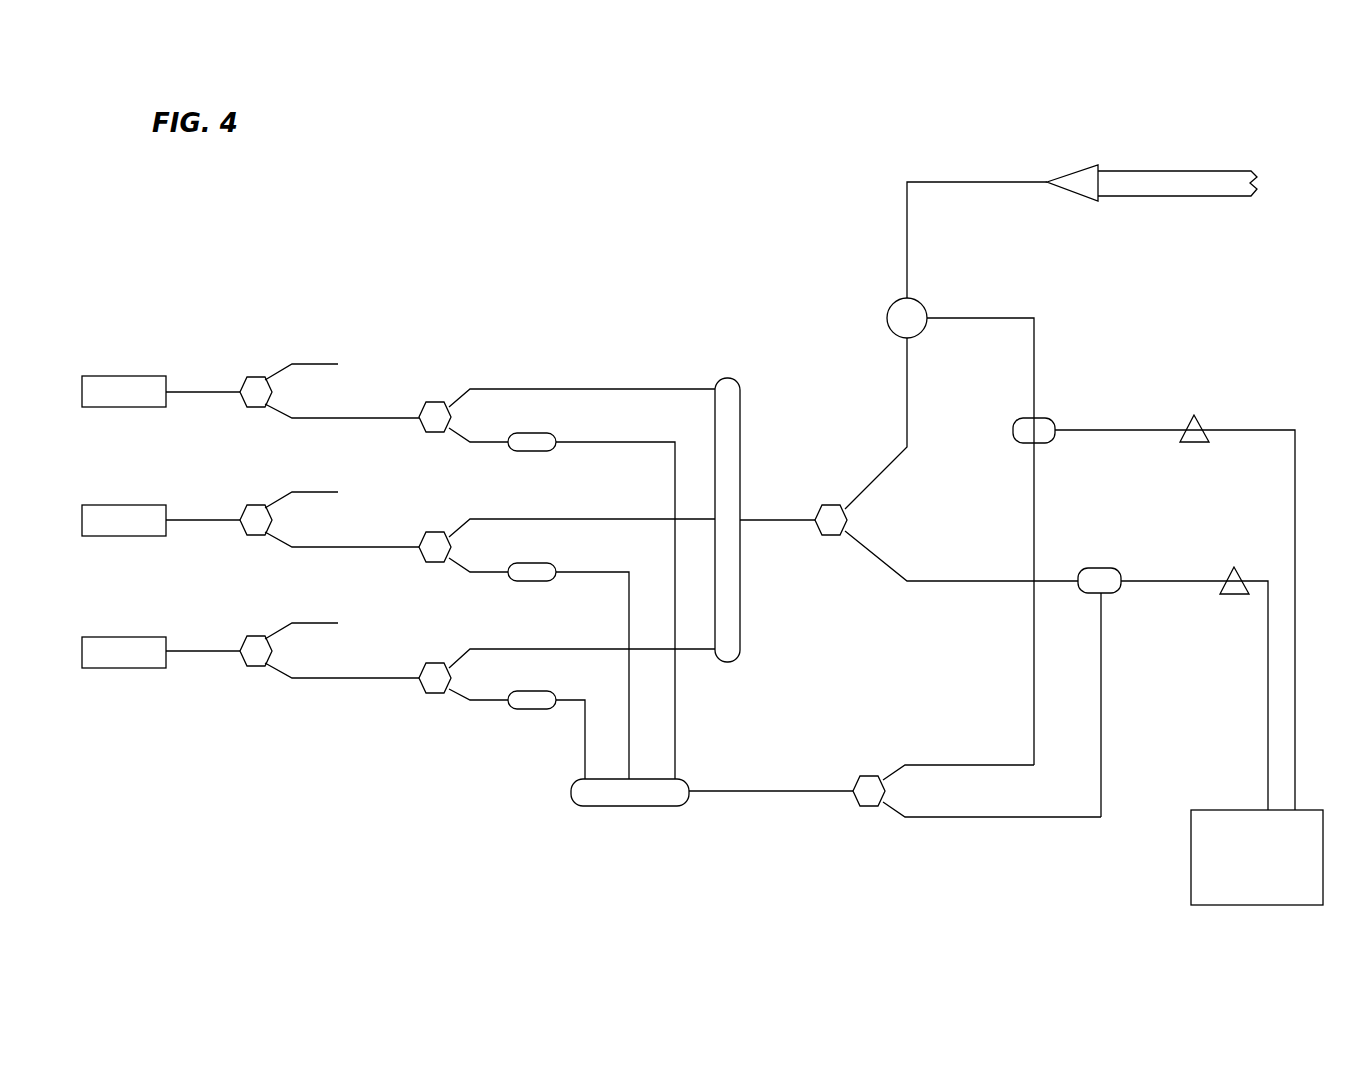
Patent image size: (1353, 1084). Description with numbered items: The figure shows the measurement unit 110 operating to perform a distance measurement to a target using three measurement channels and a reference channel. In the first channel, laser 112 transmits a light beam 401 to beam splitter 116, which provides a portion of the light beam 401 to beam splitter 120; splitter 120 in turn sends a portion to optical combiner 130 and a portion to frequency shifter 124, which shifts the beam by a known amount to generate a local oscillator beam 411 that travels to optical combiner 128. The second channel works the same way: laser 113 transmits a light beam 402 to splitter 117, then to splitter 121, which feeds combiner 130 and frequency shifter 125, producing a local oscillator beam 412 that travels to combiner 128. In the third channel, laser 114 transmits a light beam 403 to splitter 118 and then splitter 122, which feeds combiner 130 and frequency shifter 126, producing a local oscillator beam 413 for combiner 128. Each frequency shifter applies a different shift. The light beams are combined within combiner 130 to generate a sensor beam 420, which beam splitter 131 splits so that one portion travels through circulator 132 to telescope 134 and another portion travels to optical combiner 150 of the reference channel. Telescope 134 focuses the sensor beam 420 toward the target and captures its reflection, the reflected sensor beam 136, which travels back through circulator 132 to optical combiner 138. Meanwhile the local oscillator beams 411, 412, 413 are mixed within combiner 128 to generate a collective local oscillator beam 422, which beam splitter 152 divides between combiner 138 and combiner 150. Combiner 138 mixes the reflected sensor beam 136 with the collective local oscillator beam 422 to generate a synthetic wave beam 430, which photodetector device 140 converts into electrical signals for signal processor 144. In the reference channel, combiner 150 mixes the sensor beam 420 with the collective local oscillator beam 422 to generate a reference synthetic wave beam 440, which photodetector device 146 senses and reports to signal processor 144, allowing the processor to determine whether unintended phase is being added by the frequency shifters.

The measurement unit 110 is at (384, 210).
The laser 112 is at (100, 408).
The laser 113 is at (100, 537).
The laser 114 is at (100, 669).
The beam splitter 116 is at (256, 376).
The beam splitter 117 is at (256, 504).
The beam splitter 118 is at (256, 635).
The beam splitter 120 is at (428, 402).
The beam splitter 121 is at (428, 532).
The beam splitter 122 is at (428, 663).
The frequency shifter 124 is at (525, 433).
The frequency shifter 125 is at (525, 563).
The frequency shifter 126 is at (525, 691).
The optical combiner 128 is at (571, 792).
The optical combiner 130 is at (726, 377).
The beam splitter 131 is at (828, 505).
The circulator 132 is at (890, 303).
The telescope 134 is at (1073, 201).
The reflected sensor beam 136 is at (922, 238).
The optical combiner 138 is at (1020, 417).
The photodetector device 140 is at (1194, 443).
The signal processor 144 is at (1273, 895).
The photodetector device 146 is at (1232, 597).
The optical combiner 150 is at (1095, 596).
The beam splitter 152 is at (865, 775).
The light beam 401 is at (211, 402).
The light beam 402 is at (211, 530).
The light beam 403 is at (211, 661).
The local oscillator beam 411 is at (609, 430).
The local oscillator beam 412 is at (602, 560).
The local oscillator beam 413 is at (600, 717).
The sensor beam 420 is at (767, 533).
The collective local oscillator beam 422 is at (755, 803).
The synthetic wave beam 430 is at (1122, 418).
The reference synthetic wave beam 440 is at (1177, 568).